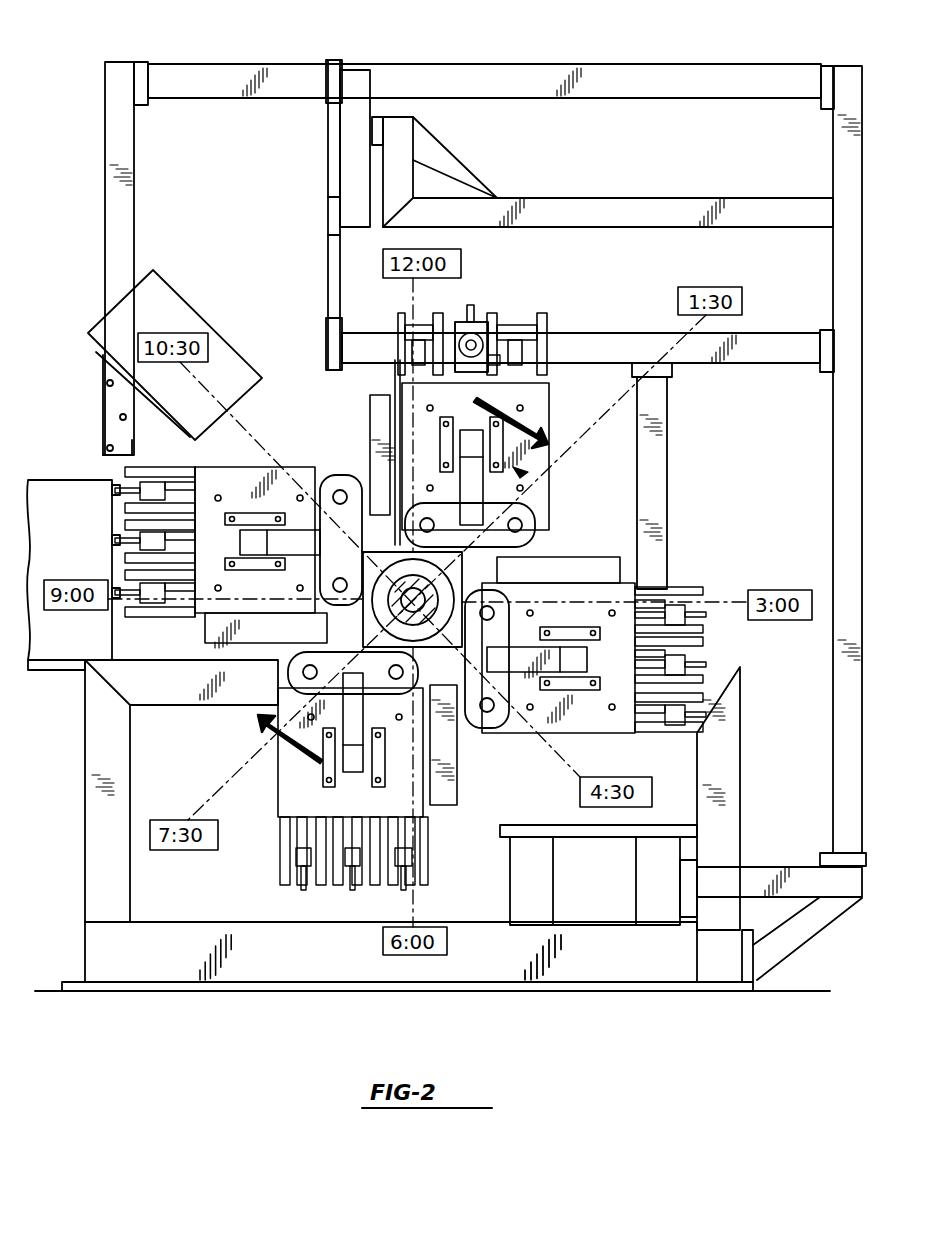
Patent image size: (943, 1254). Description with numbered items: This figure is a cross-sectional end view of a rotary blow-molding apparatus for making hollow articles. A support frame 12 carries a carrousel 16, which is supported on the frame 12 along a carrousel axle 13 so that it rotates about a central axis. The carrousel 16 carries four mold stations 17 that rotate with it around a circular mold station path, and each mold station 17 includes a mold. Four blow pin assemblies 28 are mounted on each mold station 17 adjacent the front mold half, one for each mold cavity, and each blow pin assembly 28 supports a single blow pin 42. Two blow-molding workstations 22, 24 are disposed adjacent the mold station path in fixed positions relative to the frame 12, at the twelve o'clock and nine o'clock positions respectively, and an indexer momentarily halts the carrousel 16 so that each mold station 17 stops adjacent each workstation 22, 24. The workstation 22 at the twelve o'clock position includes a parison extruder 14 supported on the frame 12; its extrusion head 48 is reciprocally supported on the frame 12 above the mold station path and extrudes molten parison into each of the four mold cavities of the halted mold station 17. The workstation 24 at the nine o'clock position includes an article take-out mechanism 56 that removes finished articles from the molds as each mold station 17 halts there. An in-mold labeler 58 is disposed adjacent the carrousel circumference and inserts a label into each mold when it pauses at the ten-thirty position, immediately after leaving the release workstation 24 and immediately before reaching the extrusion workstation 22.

The support frame 12 is at (700, 90).
The carrousel axle 13 is at (335, 608).
The parison extruder 14 is at (505, 335).
The carrousel 16 is at (637, 598).
The mold station 17 is at (285, 500).
The blow-molding workstation 22 is at (497, 305).
The blow-molding workstation 24 is at (95, 527).
The blow pin assembly 28 is at (185, 468).
The blow pin 42 is at (177, 542).
The extrusion head 48 is at (500, 362).
The article take-out mechanism 56 is at (62, 648).
The in-mold labeler 58 is at (183, 307).